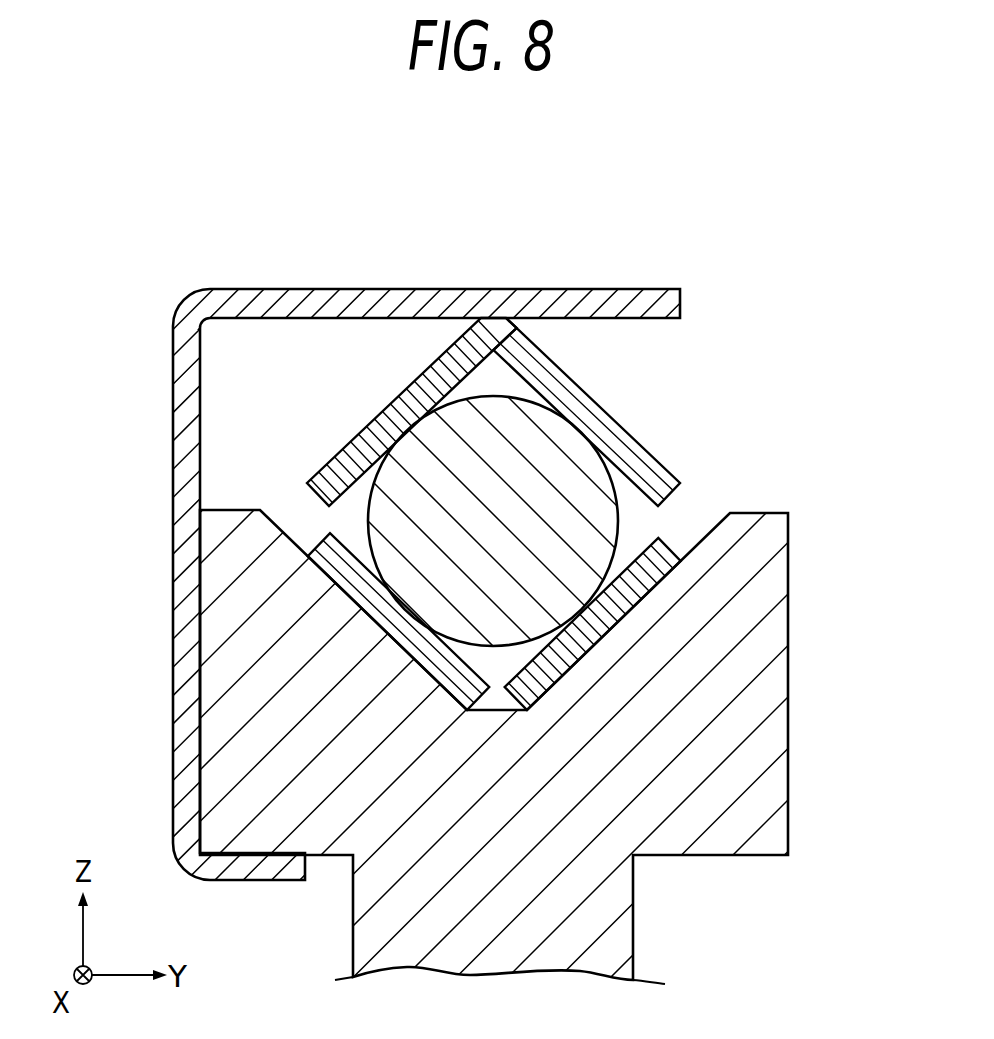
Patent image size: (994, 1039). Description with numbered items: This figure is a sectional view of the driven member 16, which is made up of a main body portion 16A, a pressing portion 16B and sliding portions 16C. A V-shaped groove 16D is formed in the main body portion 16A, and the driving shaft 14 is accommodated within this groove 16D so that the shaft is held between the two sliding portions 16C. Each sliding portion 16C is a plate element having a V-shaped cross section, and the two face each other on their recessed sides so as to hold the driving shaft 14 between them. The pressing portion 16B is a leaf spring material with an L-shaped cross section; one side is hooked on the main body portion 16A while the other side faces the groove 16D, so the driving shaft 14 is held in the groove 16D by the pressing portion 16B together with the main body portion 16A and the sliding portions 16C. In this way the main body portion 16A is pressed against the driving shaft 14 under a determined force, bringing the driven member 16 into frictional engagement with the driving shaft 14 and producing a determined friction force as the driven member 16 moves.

The driving shaft 14 is at (608, 470).
The driven member 16 is at (680, 223).
The main body portion 16A is at (788, 570).
The pressing portion 16B is at (377, 298).
The sliding portion 16C is at (360, 434).
The V-shaped groove 16D is at (710, 525).